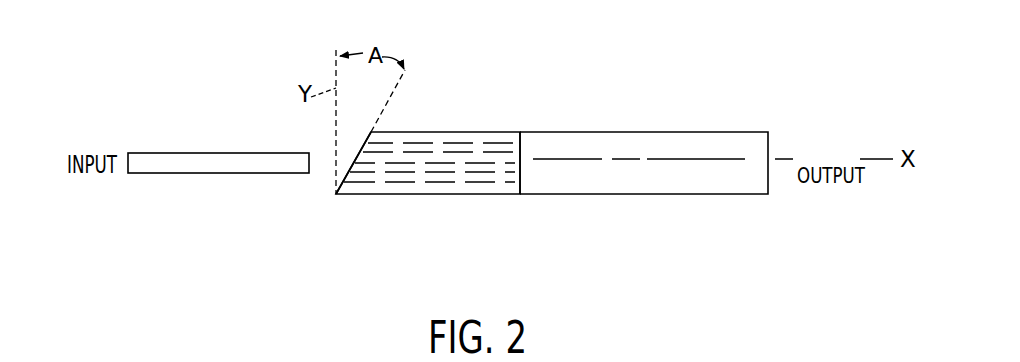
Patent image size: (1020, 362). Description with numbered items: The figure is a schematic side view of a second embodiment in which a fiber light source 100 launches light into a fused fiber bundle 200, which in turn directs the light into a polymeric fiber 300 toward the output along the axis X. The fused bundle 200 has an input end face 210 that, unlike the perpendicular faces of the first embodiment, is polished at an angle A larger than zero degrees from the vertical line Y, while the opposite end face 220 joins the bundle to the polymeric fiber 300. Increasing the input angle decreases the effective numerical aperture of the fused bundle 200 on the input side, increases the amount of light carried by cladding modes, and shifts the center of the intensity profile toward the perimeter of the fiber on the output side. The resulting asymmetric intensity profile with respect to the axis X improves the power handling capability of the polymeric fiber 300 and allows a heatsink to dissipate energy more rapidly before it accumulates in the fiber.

The fiber light source 100 is at (204, 150).
The fused fiber bundle 200 is at (454, 198).
The input end face 210 is at (361, 147).
The end face 220 is at (522, 152).
The polymeric fiber 300 is at (693, 130).